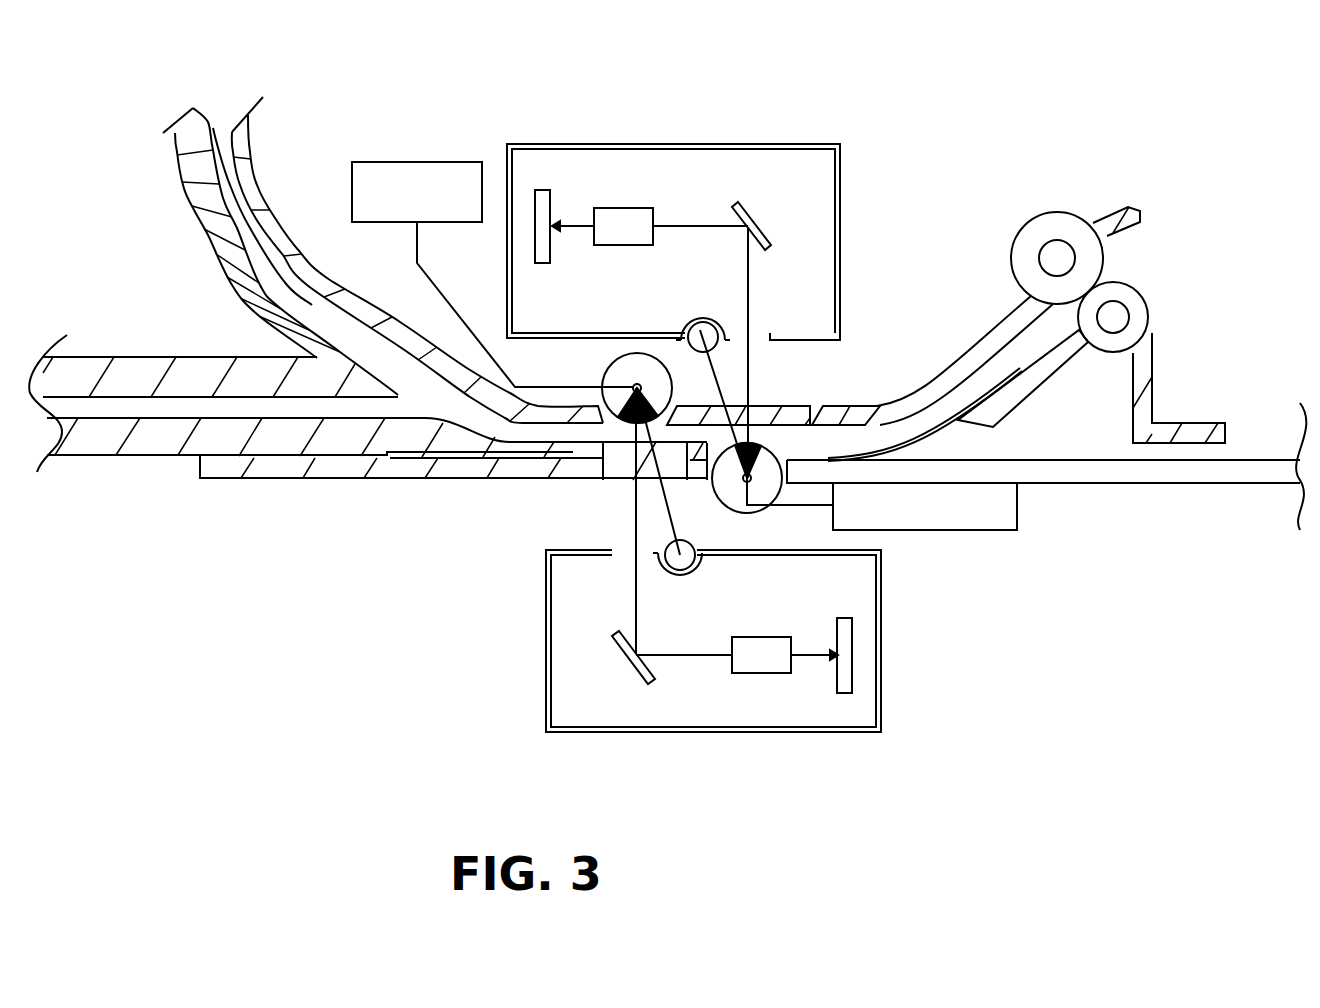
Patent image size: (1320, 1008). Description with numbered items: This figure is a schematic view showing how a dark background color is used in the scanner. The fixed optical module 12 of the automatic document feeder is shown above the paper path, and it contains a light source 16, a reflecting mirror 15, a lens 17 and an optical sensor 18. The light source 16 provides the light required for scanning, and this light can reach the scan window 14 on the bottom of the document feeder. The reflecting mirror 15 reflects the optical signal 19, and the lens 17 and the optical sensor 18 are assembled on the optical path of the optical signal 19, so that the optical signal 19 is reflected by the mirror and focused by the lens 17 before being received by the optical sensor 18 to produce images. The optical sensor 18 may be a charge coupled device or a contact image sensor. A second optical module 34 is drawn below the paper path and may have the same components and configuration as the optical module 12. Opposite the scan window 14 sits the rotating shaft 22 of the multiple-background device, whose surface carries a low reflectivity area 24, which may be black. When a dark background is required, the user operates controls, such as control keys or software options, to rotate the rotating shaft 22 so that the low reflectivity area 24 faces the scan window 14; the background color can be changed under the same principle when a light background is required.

The optical module 12 is at (845, 229).
The scan window 14 is at (767, 415).
The reflecting mirror 15 is at (757, 205).
The light source 16 is at (693, 330).
The lens 17 is at (625, 207).
The optical sensor 18 is at (541, 188).
The optical signal 19 is at (750, 293).
The rotating shaft 22 is at (752, 512).
The low reflectivity area 24 is at (758, 448).
The optical module 34 is at (883, 642).